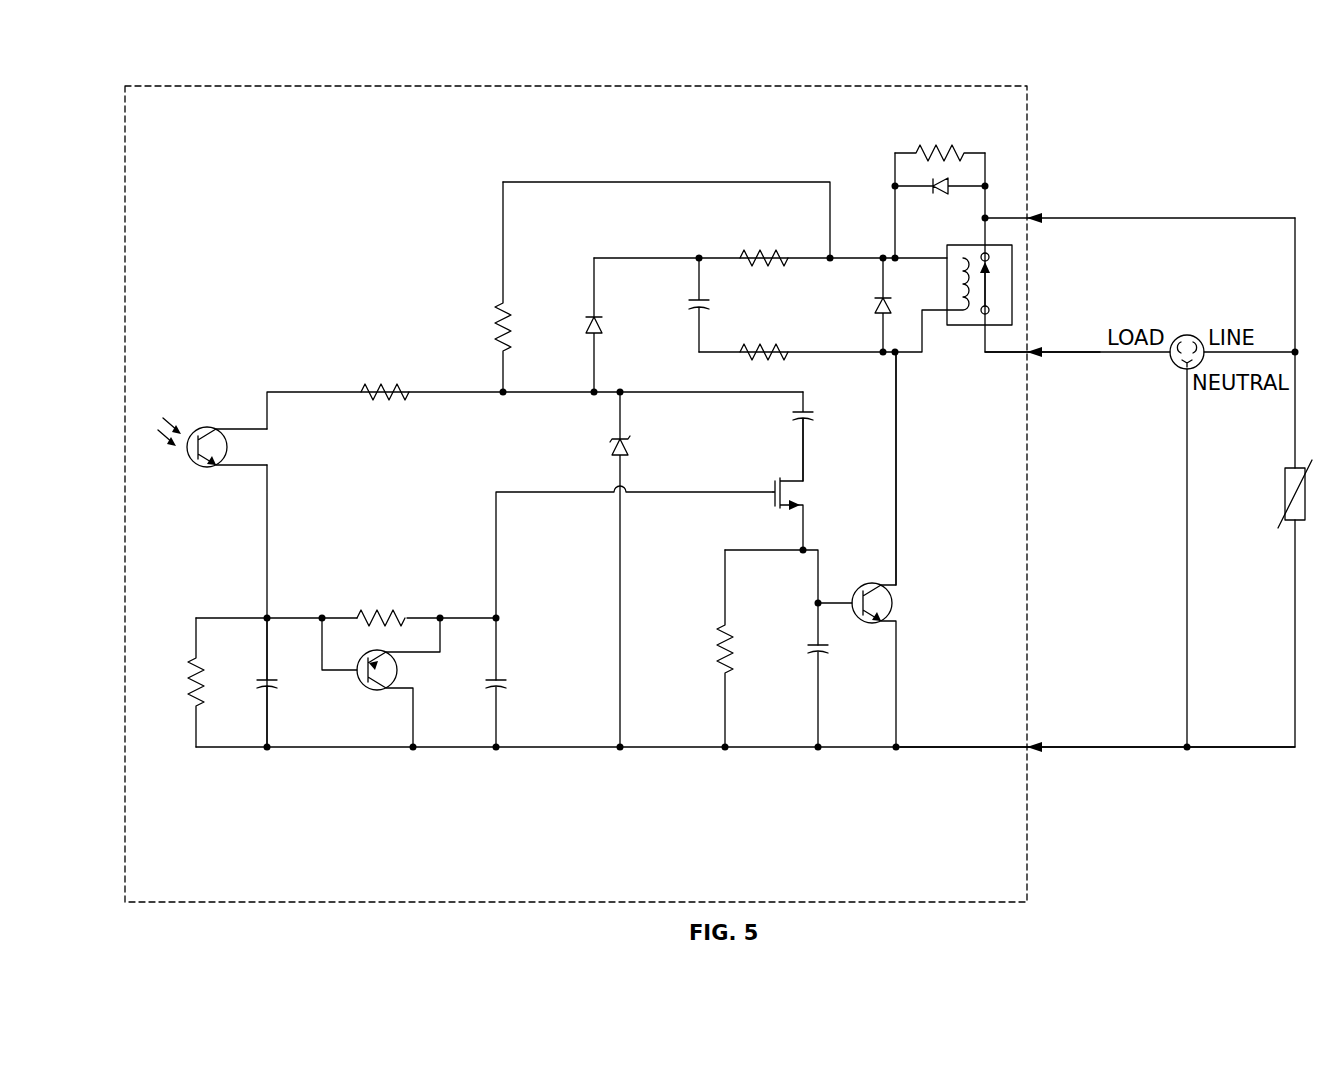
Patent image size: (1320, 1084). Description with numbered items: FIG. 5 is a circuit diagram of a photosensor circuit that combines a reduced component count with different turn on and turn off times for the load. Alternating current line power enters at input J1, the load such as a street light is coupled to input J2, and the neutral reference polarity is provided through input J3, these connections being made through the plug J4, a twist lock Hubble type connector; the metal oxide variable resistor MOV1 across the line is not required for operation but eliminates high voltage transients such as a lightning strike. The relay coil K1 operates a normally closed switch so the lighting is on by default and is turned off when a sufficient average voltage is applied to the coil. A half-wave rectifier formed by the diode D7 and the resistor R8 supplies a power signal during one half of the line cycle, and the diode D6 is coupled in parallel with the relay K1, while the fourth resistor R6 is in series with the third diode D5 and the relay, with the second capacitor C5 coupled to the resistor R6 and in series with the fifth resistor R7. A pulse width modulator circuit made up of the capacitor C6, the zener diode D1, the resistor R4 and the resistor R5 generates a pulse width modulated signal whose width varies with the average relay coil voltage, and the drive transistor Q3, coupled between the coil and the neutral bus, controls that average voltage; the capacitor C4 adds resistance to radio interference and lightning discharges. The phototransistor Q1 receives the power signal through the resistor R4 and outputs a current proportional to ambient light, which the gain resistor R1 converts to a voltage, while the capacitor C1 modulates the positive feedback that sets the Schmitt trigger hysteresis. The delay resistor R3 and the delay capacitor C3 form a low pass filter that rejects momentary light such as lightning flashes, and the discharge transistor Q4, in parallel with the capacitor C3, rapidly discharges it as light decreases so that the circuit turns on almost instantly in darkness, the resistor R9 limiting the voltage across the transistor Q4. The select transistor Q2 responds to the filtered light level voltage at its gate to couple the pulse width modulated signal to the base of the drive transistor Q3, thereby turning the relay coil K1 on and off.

The phototransistor Q1 is at (212, 442).
The select transistor Q2 is at (808, 484).
The drive transistor Q3 is at (878, 549).
The discharge transistor Q4 is at (381, 682).
The gain resistor R1 is at (178, 682).
The delay resistor R3 is at (381, 604).
The resistor R4 is at (484, 287).
The resistor R5 is at (744, 648).
The fourth resistor R6 is at (764, 245).
The fifth resistor R7 is at (764, 339).
The resistor R8 is at (940, 141).
The resistor R9 is at (385, 378).
The capacitor C1 is at (285, 682).
The delay capacitor C3 is at (514, 685).
The capacitor C4 is at (837, 651).
The second capacitor C5 is at (680, 305).
The capacitor C6 is at (824, 436).
The zener diode D1 is at (640, 569).
The third diode D5 is at (577, 325).
The diode D6 is at (864, 305).
The diode D7 is at (940, 200).
The relay coil K1 is at (979, 298).
The input J1 is at (1140, 208).
The input J2 is at (1042, 341).
The input J3 is at (1097, 736).
The plug J4 is at (1163, 558).
The metal oxide variable resistor MOV1 is at (1272, 485).